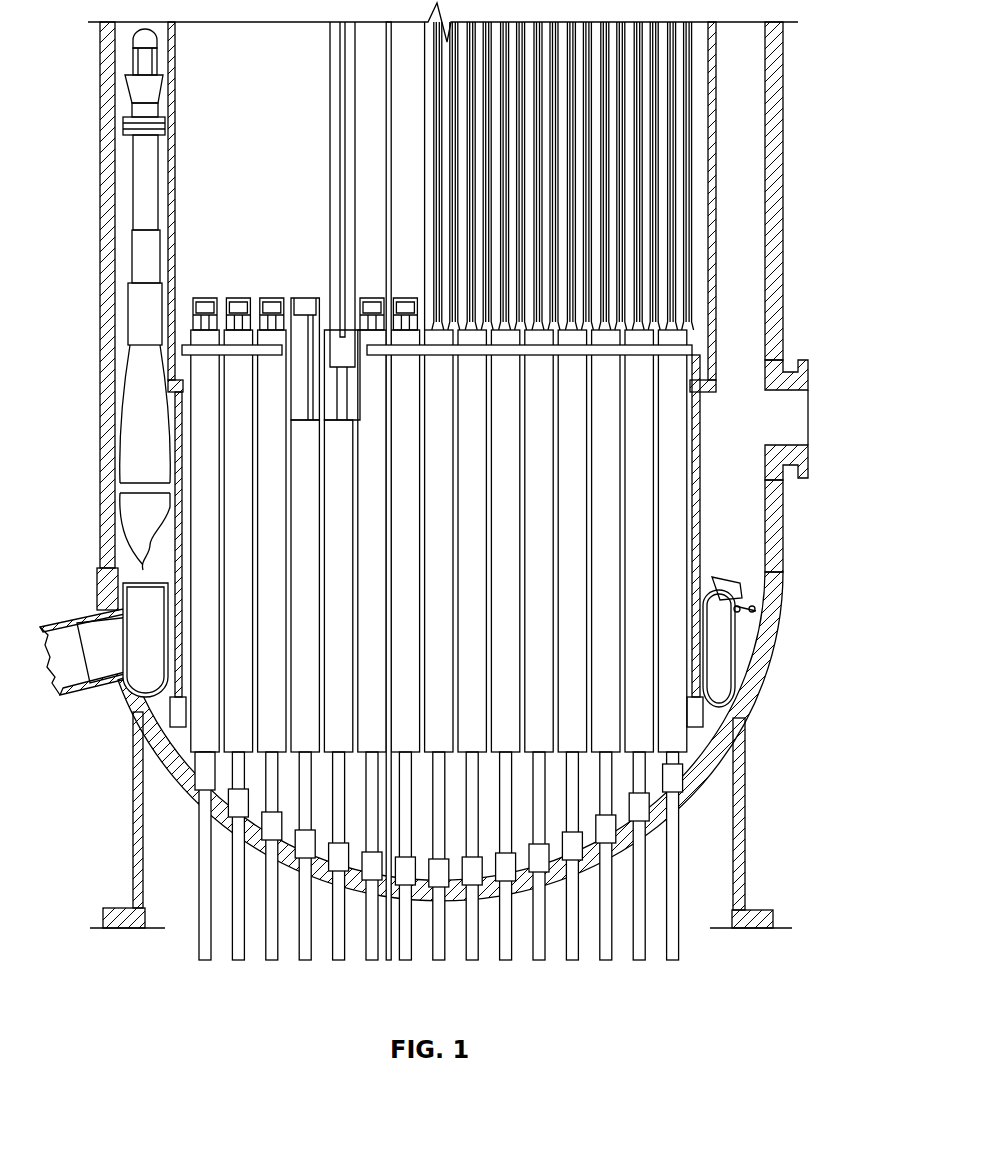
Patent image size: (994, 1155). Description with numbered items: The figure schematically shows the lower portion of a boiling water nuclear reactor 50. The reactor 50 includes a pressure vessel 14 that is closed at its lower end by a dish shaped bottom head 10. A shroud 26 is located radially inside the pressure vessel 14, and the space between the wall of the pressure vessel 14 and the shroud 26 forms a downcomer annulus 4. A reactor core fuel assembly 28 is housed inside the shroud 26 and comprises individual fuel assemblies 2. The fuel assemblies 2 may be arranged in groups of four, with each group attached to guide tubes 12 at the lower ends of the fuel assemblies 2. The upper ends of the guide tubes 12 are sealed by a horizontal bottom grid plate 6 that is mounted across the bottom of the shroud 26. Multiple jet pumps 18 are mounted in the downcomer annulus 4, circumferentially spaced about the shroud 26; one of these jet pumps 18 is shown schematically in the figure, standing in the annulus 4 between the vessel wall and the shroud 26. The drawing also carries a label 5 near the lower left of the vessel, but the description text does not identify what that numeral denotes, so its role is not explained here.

The fuel assemblies 2 is at (650, 300).
The downcomer annulus 4 is at (745, 177).
The inlet nozzle thermal sleeve 5 is at (140, 588).
The horizontal bottom grid plate 6 is at (690, 380).
The bottom head 10 is at (460, 897).
The guide tubes 12 is at (473, 405).
The pressure vessel 14 is at (100, 405).
The jet pumps 18 is at (122, 208).
The shroud 26 is at (720, 128).
The reactor core fuel assembly 28 is at (692, 72).
The boiling water nuclear reactor 50 is at (775, 865).